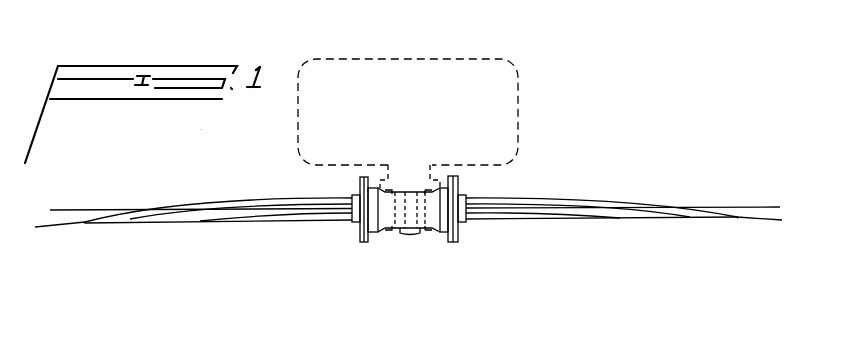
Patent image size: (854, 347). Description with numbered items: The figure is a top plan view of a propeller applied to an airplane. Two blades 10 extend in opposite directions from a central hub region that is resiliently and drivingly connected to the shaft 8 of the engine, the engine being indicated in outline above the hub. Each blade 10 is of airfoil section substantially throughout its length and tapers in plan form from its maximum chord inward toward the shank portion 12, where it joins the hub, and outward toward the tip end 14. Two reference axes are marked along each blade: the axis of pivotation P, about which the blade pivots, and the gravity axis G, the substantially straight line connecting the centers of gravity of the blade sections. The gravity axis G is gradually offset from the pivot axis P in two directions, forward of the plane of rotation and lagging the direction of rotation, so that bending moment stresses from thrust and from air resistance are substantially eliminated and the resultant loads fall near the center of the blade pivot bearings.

The shaft 8 is at (458, 183).
The blades 10 is at (232, 218).
The shank portion 12 is at (353, 219).
The tip end 14 is at (88, 223).
The axis of pivotation P is at (415, 197).
The gravity axis G is at (480, 237).